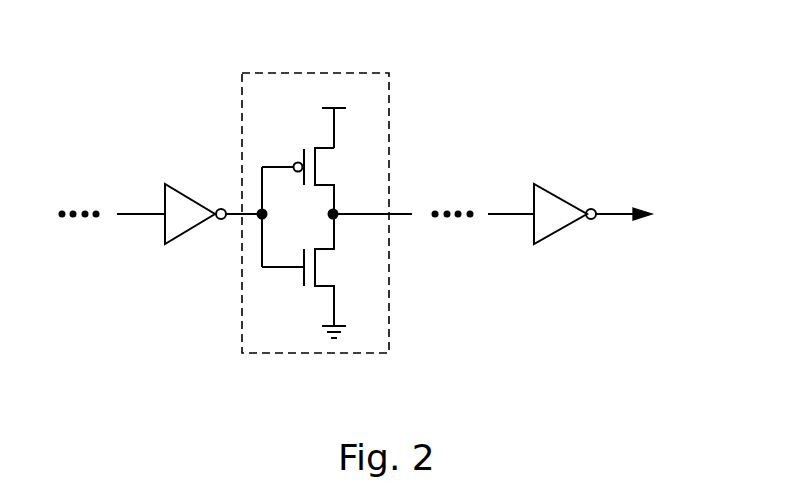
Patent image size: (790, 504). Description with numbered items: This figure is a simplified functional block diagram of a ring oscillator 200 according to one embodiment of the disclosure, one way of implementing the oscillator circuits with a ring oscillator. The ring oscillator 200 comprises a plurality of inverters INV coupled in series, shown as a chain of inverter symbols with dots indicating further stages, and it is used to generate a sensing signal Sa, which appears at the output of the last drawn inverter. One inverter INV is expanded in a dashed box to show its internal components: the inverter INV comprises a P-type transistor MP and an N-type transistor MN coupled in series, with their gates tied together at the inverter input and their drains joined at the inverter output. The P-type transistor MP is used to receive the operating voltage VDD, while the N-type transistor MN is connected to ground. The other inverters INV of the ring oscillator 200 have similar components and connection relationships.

The ring oscillator 200 is at (152, 51).
The inverter INV is at (241, 116).
The operating voltage VDD is at (329, 118).
The P-type transistor MP is at (309, 181).
The N-type transistor MN is at (309, 276).
The sensing signal Sa is at (638, 215).